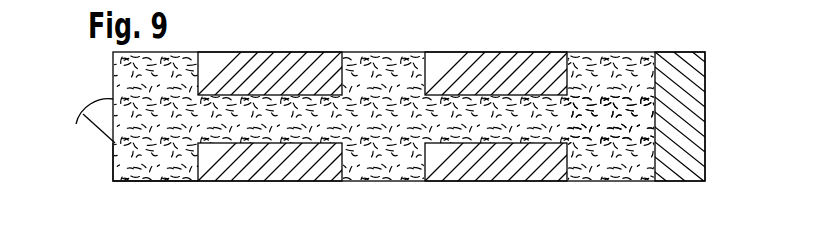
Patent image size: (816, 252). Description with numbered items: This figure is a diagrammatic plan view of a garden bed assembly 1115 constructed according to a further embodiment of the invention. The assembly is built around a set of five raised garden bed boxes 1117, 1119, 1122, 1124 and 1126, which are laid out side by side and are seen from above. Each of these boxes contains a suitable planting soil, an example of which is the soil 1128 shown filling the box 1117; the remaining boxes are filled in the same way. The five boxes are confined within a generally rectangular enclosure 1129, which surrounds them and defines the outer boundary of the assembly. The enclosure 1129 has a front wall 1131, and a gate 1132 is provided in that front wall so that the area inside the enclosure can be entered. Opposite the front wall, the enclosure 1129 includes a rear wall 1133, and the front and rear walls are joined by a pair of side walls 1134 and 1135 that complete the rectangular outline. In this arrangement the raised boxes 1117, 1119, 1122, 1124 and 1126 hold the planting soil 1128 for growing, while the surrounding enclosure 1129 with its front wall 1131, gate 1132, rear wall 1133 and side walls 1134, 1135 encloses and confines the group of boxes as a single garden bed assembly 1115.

The garden bed assembly 1115 is at (651, 187).
The raised garden bed box 1117 is at (194, 73).
The raised garden bed box 1119 is at (424, 75).
The raised garden bed box 1122 is at (648, 69).
The raised garden bed box 1124 is at (411, 168).
The raised garden bed box 1126 is at (197, 164).
The soil 1128 is at (303, 68).
The rectangular enclosure 1129 is at (535, 184).
The front wall 1131 is at (115, 163).
The gate 1132 is at (95, 127).
The rear wall 1133 is at (705, 123).
The side wall 1134 is at (502, 66).
The side wall 1135 is at (593, 183).